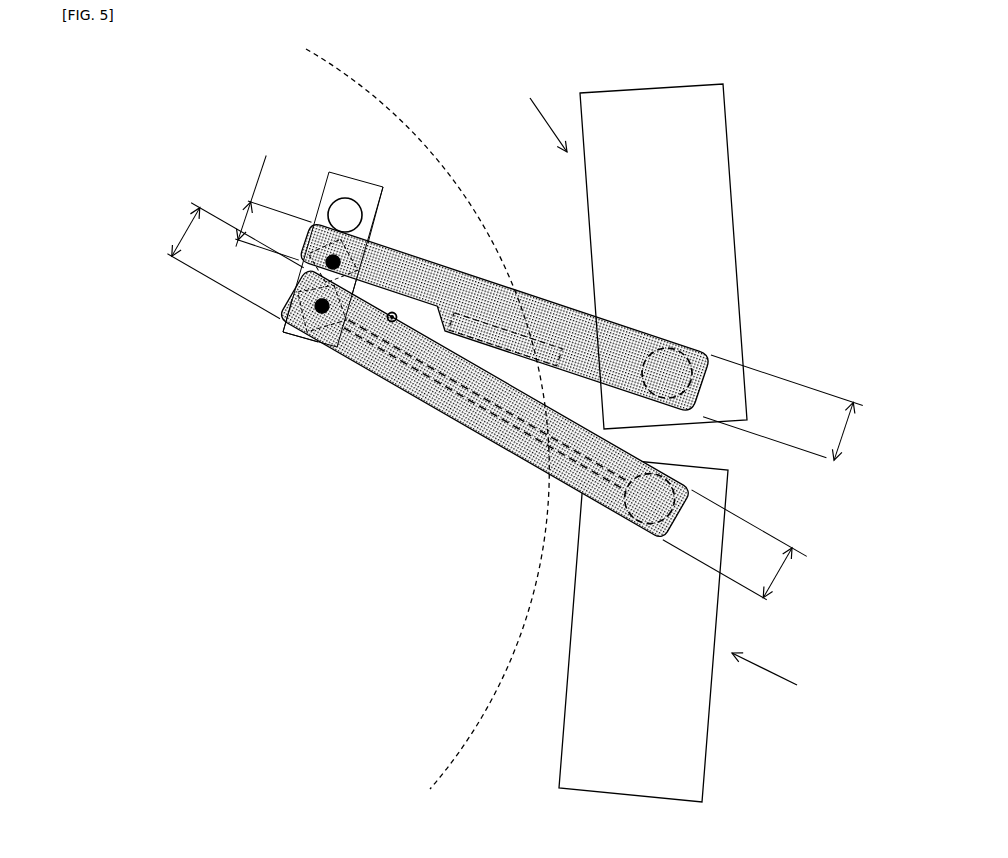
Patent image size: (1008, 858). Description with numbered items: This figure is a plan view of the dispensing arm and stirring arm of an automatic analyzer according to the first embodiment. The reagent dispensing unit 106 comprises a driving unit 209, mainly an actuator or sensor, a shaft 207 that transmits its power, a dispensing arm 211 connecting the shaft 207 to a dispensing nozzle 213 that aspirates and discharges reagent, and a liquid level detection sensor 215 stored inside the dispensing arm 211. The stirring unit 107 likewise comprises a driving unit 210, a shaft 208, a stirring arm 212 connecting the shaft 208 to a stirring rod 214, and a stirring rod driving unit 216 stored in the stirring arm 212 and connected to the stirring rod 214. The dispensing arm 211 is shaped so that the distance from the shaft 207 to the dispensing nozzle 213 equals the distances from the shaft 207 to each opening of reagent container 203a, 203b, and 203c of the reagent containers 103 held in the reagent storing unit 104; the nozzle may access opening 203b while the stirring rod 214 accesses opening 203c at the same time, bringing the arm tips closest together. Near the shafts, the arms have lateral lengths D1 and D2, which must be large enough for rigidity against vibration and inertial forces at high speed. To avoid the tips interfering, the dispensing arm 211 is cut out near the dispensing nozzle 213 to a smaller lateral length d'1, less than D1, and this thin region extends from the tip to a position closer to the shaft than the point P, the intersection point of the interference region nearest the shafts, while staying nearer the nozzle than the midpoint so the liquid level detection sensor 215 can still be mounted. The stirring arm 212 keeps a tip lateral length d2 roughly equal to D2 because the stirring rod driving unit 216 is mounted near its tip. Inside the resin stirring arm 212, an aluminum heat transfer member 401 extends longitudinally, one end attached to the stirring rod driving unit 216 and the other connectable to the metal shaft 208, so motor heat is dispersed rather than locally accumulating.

The reagent container 103 is at (355, 178).
The reagent storing unit 104 is at (413, 125).
The reagent dispensing unit 106 is at (535, 116).
The stirring unit 107 is at (784, 675).
The opening of reagent container 203a is at (372, 218).
The opening of reagent container 203b is at (372, 243).
The opening of reagent container 203c is at (278, 320).
The shaft (first shaft) 207 is at (693, 370).
The shaft (second shaft) 208 is at (637, 483).
The driving unit 209 is at (730, 132).
The driving unit 210 is at (560, 748).
The dispensing arm (first arm) 211 is at (620, 320).
The stirring arm (second arm) 212 is at (510, 457).
The dispensing nozzle 213 is at (331, 256).
The stirring rod 214 is at (328, 326).
The liquid level detection sensor 215 is at (492, 320).
The stirring rod driving unit 216 is at (321, 314).
The heat transfer member 401 is at (483, 410).
The point P is at (393, 322).
The length D1 is at (777, 409).
The length D2 is at (735, 548).
The length d2 is at (227, 261).
The length d'1 is at (278, 211).